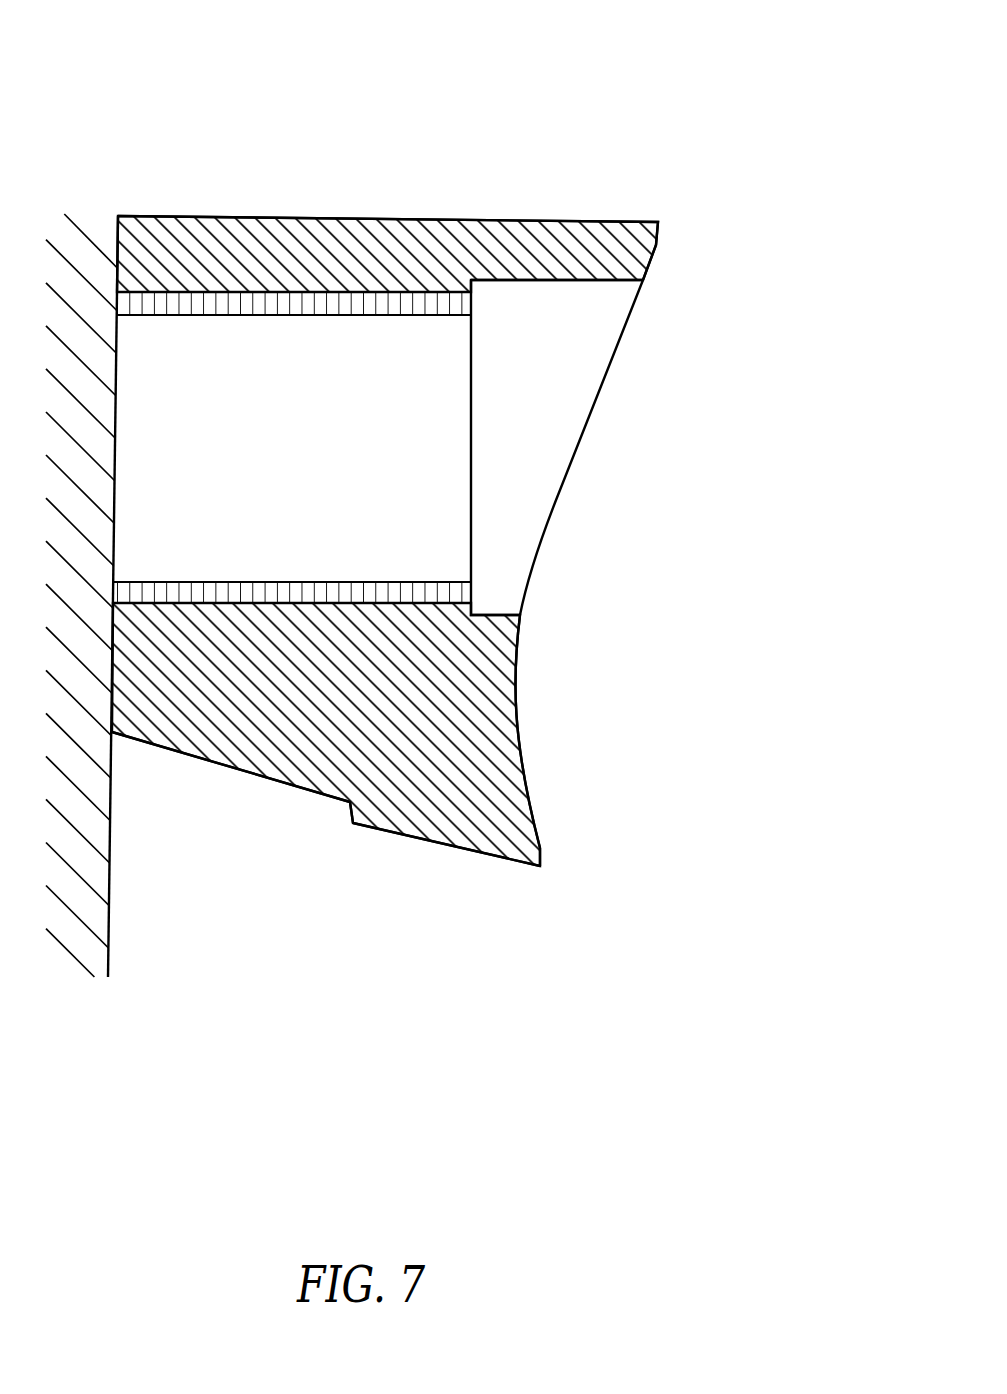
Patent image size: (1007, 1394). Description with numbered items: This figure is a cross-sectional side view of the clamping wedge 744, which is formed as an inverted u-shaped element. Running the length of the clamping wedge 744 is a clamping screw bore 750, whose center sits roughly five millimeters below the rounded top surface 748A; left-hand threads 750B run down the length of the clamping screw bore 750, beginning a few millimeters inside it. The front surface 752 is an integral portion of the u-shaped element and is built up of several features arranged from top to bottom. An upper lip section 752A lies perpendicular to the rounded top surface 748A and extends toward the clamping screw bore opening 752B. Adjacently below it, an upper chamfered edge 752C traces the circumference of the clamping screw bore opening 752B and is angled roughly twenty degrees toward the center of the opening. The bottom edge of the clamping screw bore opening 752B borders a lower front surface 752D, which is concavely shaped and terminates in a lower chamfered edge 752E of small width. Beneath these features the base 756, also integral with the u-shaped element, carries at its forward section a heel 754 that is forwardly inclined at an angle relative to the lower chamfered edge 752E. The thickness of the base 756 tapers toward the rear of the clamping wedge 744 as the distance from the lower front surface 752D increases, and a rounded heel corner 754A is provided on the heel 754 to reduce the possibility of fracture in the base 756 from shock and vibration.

The clamping wedge 744 is at (669, 115).
The top surface 748A is at (399, 202).
The clamping screw bore 750 is at (561, 372).
The left-hand threads 750B is at (491, 592).
The front surface 752 is at (608, 564).
The upper lip section 752A is at (680, 227).
The clamping screw bore opening 752B is at (610, 411).
The upper chamfered edge 752C is at (663, 284).
The lower front surface 752D is at (545, 777).
The lower chamfered edge 752E is at (560, 854).
The heel 754 is at (454, 864).
The rounded heel corner 754A is at (346, 820).
The base 756 is at (219, 780).